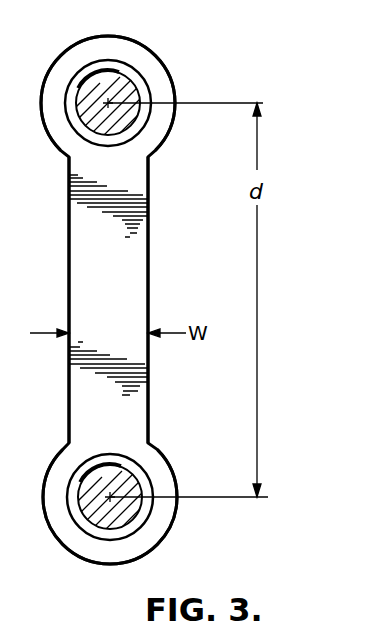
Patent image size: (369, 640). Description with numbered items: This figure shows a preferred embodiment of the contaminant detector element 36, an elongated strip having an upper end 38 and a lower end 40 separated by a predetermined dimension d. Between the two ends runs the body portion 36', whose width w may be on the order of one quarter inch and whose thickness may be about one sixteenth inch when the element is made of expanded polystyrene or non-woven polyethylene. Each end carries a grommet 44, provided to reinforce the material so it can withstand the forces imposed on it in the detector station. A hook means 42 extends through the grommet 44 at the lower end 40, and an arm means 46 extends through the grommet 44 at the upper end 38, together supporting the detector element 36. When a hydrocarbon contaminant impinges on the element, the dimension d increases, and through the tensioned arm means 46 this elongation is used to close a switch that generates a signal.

The contaminant detector element 36 is at (88, 300).
The body portion 36' is at (140, 300).
The upper end 38 is at (171, 73).
The lower end 40 is at (167, 533).
The hook means 42 is at (128, 485).
The grommet 44 is at (140, 124).
The arm means 46 is at (112, 78).